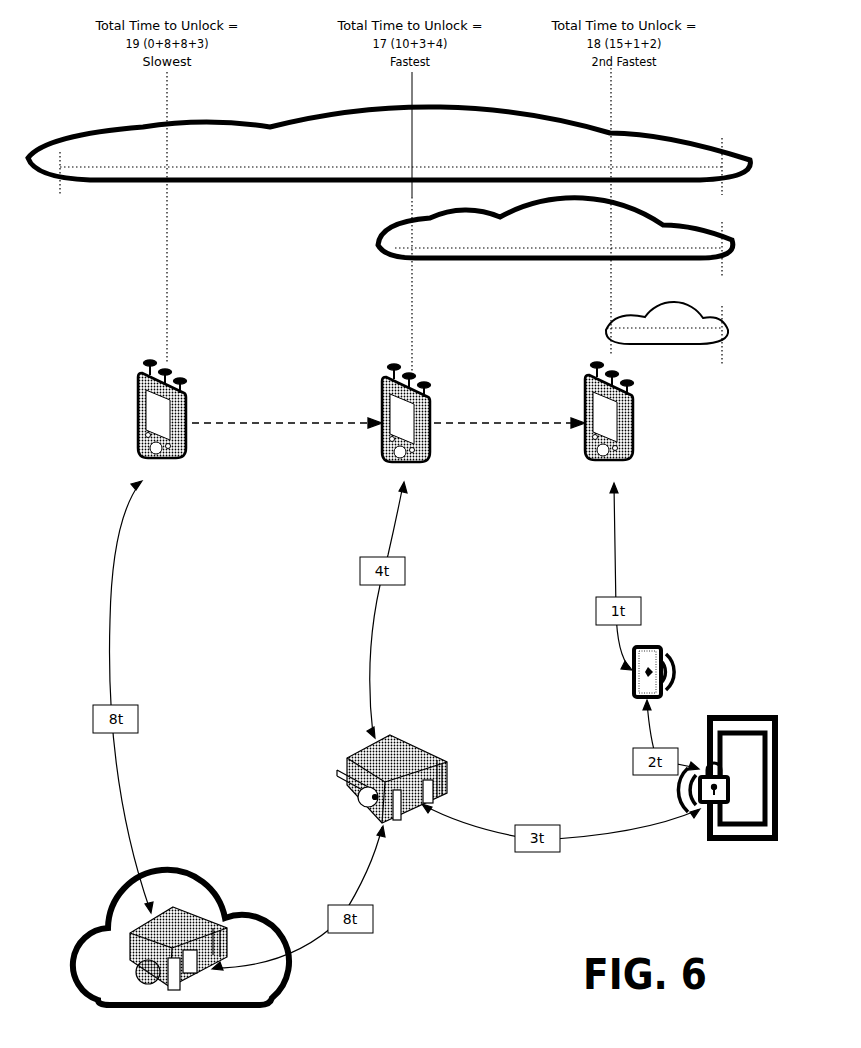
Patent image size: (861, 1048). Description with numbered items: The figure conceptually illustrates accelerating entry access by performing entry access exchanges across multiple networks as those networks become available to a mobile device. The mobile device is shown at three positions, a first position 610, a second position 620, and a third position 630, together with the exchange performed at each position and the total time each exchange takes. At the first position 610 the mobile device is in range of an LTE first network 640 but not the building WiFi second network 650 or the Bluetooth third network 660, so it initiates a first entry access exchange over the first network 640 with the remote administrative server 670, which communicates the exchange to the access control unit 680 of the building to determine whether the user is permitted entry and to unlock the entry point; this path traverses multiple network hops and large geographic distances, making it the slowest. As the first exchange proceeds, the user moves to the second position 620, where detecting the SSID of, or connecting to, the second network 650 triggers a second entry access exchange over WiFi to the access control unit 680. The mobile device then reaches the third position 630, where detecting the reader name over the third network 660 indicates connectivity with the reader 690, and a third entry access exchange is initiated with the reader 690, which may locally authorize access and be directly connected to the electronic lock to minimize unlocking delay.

The first position 610 is at (165, 292).
The second position 620 is at (410, 317).
The third position 630 is at (610, 348).
The first network 640 is at (130, 130).
The second network 650 is at (490, 261).
The third network 660 is at (704, 315).
The remote administrative server 670 is at (203, 920).
The access control unit 680 is at (347, 762).
The reader 690 is at (660, 647).